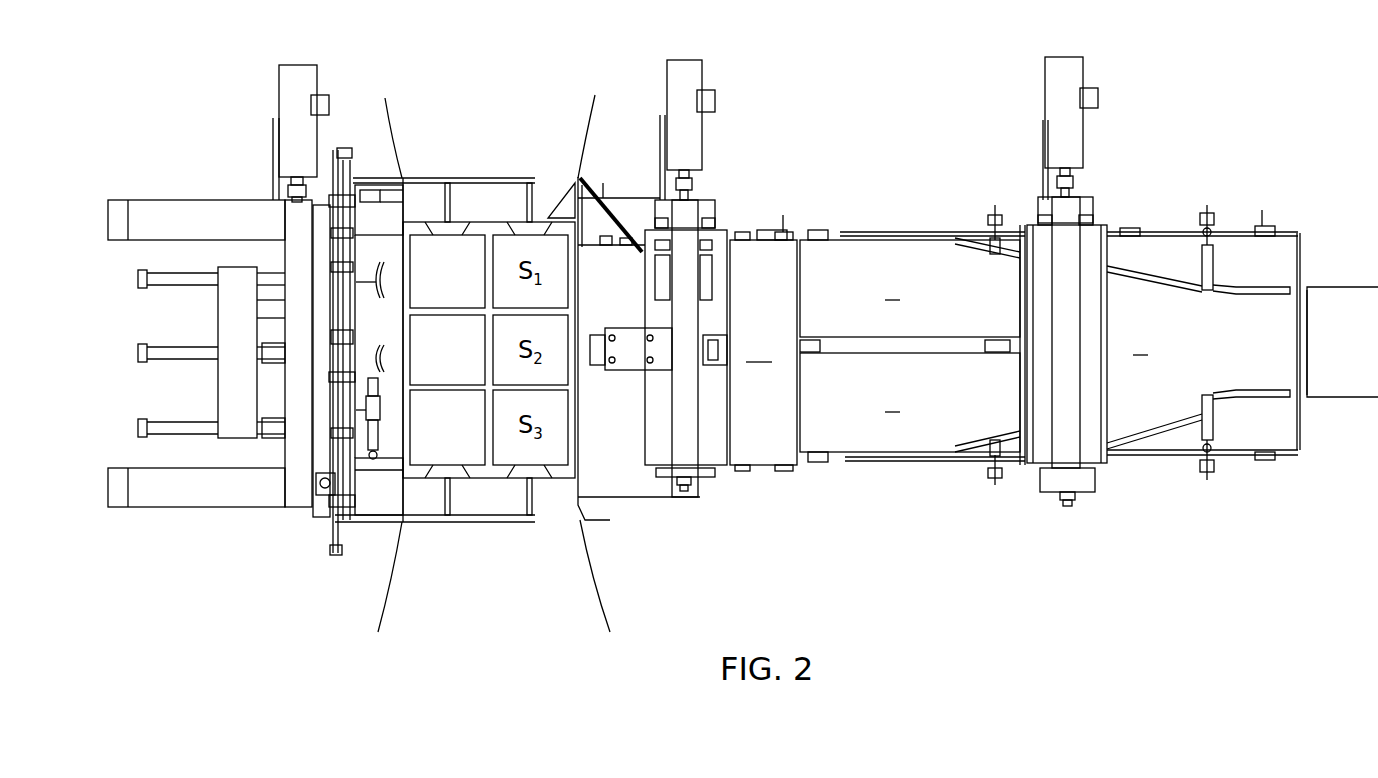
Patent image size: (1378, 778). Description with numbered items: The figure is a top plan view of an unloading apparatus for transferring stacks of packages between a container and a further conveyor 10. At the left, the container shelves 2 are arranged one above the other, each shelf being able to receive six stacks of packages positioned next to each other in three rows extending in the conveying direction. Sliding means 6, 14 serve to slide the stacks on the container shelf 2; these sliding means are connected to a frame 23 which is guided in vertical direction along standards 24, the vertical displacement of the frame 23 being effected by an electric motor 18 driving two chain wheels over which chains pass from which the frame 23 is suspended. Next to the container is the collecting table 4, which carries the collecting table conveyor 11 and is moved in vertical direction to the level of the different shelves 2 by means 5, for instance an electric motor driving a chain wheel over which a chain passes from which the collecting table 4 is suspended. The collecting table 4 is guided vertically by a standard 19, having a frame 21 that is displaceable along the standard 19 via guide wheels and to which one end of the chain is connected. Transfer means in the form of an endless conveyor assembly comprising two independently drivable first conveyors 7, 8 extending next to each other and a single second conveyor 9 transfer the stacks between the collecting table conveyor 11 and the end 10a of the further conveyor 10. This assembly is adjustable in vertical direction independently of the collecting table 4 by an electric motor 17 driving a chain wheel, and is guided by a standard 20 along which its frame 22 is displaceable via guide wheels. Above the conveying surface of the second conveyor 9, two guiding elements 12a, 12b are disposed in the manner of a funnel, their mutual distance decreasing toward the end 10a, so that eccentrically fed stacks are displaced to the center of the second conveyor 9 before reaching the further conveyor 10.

The shelves 2 is at (564, 470).
The collecting table 4 is at (763, 212).
The means for moving the collecting table 5 is at (680, 75).
The sliding means 6 is at (375, 383).
The first conveyor 7 is at (910, 288).
The first conveyor 8 is at (910, 402).
The second conveyor 9 is at (1203, 335).
The further conveyor 10 is at (1355, 360).
The end of the further conveyor 10a is at (1312, 326).
The collecting table conveyor 11 is at (763, 343).
The guiding element 12a is at (1238, 298).
The guiding element 12b is at (1238, 393).
The sliding means 14 is at (527, 228).
The electric motor 17 is at (1063, 85).
The electric motor 18 is at (298, 85).
The standard 19 is at (685, 222).
The standard 20 is at (1070, 213).
The frame 21 is at (712, 455).
The frame 22 is at (1043, 443).
The frame 23 is at (322, 490).
The standards 24 is at (298, 222).